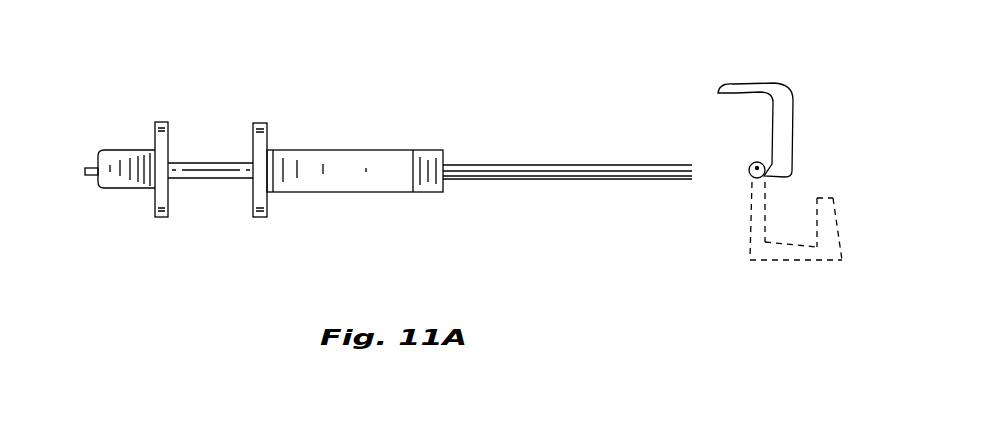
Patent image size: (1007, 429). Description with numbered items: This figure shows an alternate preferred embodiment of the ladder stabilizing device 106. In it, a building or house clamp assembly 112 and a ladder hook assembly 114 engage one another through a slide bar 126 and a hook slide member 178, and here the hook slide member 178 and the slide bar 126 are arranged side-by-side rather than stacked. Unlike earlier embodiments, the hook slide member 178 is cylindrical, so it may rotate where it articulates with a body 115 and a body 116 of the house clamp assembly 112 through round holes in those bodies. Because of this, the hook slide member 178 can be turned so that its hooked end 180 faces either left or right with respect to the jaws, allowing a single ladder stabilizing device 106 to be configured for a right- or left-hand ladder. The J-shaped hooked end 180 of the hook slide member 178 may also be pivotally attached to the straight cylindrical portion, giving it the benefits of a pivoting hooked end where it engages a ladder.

The ladder stabilizing device 106 is at (541, 133).
The house clamp assembly 112 is at (357, 158).
The ladder hook assembly 114 is at (92, 176).
The body 115 is at (137, 150).
The body 116 is at (372, 106).
The slide bar 126 is at (567, 163).
The hook slide member 178 is at (553, 205).
The hooked end 180 is at (742, 72).